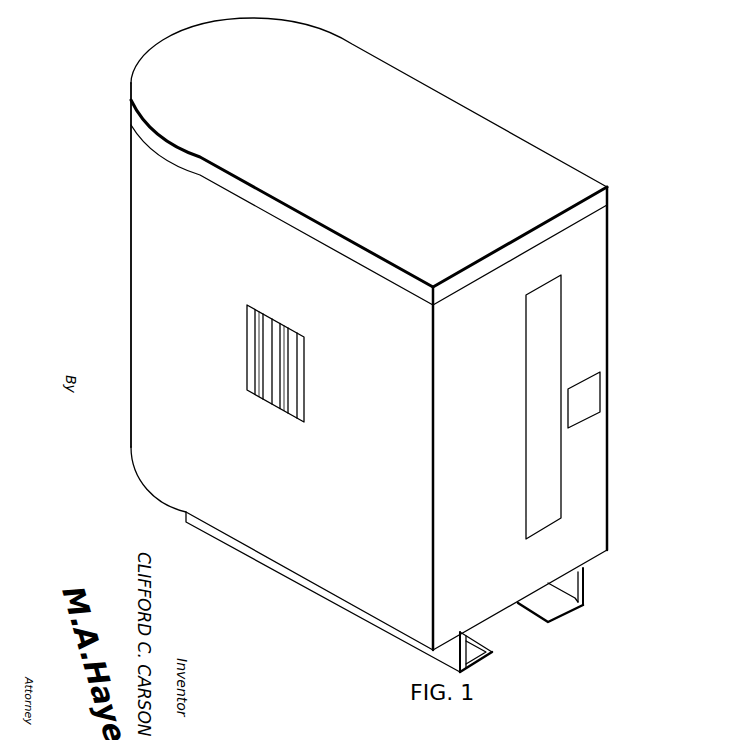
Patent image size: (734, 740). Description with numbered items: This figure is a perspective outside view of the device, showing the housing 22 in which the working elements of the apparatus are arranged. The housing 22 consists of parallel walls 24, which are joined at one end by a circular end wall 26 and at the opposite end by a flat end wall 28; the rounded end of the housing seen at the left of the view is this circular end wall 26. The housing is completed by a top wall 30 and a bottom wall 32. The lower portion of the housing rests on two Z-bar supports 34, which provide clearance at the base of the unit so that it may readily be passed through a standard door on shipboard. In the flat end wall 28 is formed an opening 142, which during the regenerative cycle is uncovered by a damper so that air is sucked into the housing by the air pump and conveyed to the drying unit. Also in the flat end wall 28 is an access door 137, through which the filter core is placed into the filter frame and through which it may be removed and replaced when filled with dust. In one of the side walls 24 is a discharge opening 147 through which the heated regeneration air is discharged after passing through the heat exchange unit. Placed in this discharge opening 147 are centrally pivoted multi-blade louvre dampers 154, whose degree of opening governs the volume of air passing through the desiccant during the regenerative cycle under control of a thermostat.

The housing 22 is at (153, 262).
The parallel walls 24 is at (358, 593).
The circular end wall 26 is at (131, 190).
The flat end wall 28 is at (598, 512).
The top wall 30 is at (462, 120).
The bottom wall 32 is at (492, 615).
The Z-bar supports 34 is at (490, 650).
The access door 137 is at (533, 405).
The opening 142 is at (593, 398).
The discharge opening 147 is at (278, 398).
The multi-blade dampers 154 is at (262, 345).